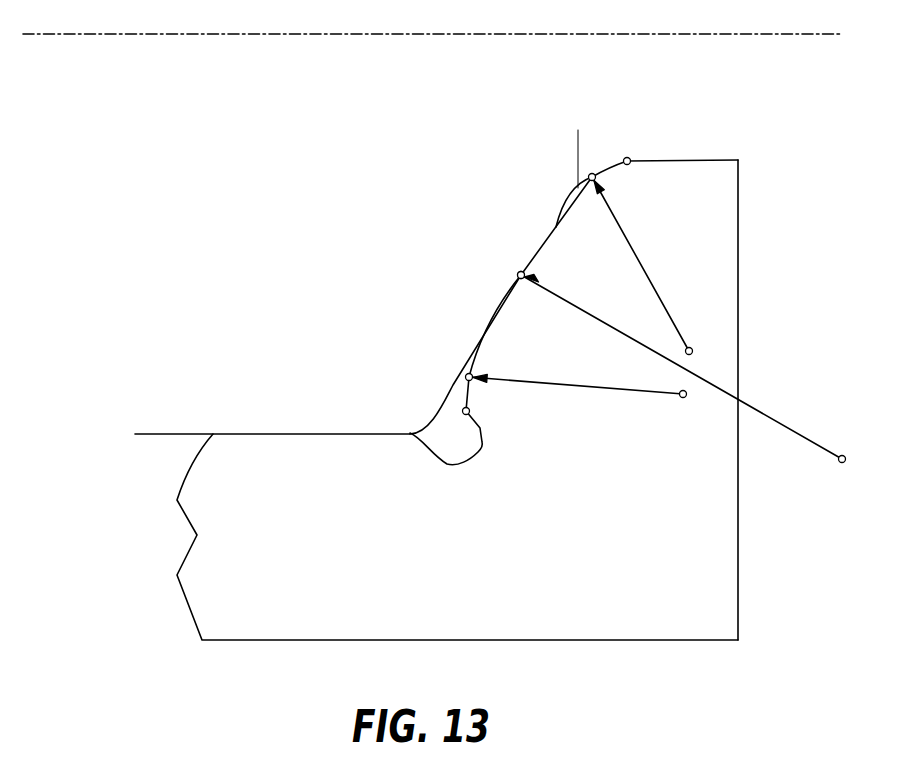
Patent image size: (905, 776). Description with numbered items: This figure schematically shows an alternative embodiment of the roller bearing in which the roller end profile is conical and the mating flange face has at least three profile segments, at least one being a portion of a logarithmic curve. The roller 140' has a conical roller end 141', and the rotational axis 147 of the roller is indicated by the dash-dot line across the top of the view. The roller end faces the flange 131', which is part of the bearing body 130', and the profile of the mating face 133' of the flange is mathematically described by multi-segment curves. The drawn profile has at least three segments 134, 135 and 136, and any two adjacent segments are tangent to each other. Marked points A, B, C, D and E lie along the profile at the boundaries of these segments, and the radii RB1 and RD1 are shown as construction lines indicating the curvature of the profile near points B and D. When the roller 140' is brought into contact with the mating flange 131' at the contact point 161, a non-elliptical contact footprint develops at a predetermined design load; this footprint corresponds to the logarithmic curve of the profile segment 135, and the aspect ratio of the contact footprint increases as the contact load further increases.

The rotational axis 147 is at (70, 36).
The first member body 130' is at (497, 426).
The flange 131' is at (770, 400).
The roller 140' is at (308, 376).
The conical roller end 141' is at (530, 140).
The profile segment 134 is at (621, 159).
The profile segment 135 is at (577, 187).
The mating face 133' is at (501, 305).
The profile segment 136 is at (465, 394).
The contact point 161 is at (516, 278).
The point A is at (630, 158).
The point B is at (591, 182).
The point C is at (524, 281).
The point D is at (473, 383).
The point E is at (463, 414).
The radius of curvature at B RB1 is at (653, 279).
The radius of curvature at D RD1 is at (590, 387).